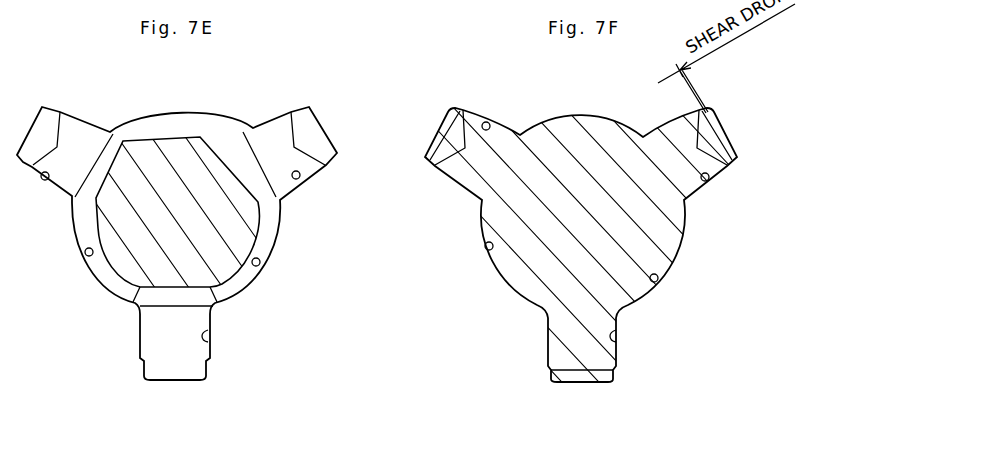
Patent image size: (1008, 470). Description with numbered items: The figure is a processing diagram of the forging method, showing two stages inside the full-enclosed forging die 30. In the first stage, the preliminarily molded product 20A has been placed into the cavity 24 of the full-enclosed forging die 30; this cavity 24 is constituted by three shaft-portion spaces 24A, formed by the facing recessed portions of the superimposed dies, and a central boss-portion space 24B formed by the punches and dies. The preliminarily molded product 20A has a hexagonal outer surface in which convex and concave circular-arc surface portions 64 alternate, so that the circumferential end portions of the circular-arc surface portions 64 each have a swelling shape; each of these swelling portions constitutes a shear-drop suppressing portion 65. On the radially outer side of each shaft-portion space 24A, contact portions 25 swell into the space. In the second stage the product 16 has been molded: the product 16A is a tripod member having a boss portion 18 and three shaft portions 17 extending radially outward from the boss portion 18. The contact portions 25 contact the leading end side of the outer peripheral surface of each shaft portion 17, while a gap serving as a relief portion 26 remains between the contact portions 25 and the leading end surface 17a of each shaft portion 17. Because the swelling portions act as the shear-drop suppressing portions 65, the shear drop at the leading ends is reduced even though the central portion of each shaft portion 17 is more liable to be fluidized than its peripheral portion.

In FIG. 7E, the full-enclosed forging die 30 is at (188, 98).
In FIG. 7F, the full-enclosed forging die 30 is at (595, 98).
In FIG. 7E, the concave circular-arc surface portions 64 is at (96, 158).
In FIG. 7E, the shear-drop suppressing portion 65 is at (130, 139).
In FIG. 7E, the contact portions 25 is at (57, 148).
In FIG. 7F, the contact portions 25 is at (455, 145).
In FIG. 7E, the shaft-portion spaces 24A is at (42, 179).
In FIG. 7F, the shaft-portion spaces 24A is at (482, 122).
In FIG. 7E, the boss-portion space 24B is at (86, 253).
In FIG. 7F, the boss-portion space 24B is at (485, 244).
In FIG. 7E, the cavity 24 is at (258, 266).
In FIG. 7F, the cavity 24 is at (655, 282).
In FIG. 7E, the preliminarily molded product 20A is at (137, 258).
In FIG. 7F, the shaft portions 17 is at (468, 185).
In FIG. 7F, the leading end surface 17a is at (438, 112).
In FIG. 7F, the gap (relief portion) 26 is at (440, 132).
In FIG. 7F, the product 16A is at (546, 258).
In FIG. 7F, the boss portion 18 is at (665, 226).
In FIG. 7F, the product 16 is at (681, 261).